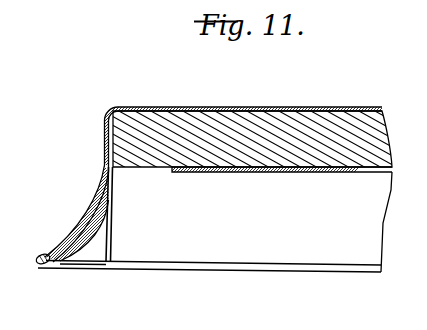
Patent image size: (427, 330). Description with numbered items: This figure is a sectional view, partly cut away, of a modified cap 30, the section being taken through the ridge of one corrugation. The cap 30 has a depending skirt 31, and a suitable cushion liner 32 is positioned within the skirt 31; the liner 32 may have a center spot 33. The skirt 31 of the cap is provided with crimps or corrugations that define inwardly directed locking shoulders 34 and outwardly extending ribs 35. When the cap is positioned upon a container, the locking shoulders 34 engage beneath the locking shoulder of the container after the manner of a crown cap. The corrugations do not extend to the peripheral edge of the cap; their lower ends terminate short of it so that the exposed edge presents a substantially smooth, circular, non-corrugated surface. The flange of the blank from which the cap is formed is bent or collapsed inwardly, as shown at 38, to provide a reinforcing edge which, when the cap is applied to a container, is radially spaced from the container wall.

The cap 30 is at (323, 90).
The skirt 31 is at (105, 137).
The cushion liner 32 is at (150, 119).
The center spot 33 is at (295, 173).
The locking shoulder 34 is at (111, 262).
The rib 35 is at (59, 248).
The reinforcing edge 38 is at (42, 265).